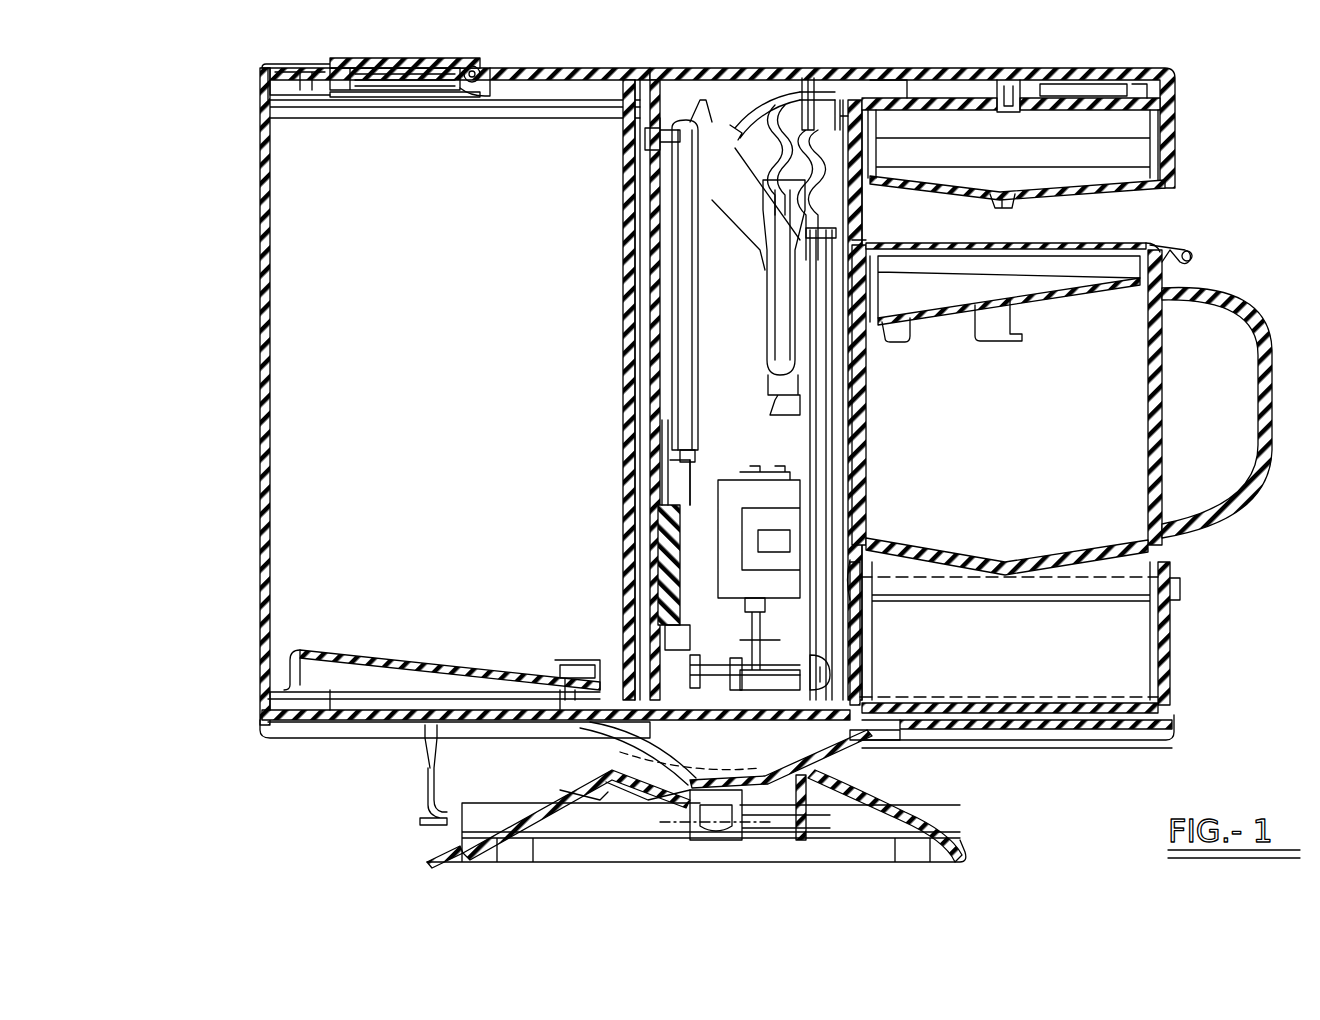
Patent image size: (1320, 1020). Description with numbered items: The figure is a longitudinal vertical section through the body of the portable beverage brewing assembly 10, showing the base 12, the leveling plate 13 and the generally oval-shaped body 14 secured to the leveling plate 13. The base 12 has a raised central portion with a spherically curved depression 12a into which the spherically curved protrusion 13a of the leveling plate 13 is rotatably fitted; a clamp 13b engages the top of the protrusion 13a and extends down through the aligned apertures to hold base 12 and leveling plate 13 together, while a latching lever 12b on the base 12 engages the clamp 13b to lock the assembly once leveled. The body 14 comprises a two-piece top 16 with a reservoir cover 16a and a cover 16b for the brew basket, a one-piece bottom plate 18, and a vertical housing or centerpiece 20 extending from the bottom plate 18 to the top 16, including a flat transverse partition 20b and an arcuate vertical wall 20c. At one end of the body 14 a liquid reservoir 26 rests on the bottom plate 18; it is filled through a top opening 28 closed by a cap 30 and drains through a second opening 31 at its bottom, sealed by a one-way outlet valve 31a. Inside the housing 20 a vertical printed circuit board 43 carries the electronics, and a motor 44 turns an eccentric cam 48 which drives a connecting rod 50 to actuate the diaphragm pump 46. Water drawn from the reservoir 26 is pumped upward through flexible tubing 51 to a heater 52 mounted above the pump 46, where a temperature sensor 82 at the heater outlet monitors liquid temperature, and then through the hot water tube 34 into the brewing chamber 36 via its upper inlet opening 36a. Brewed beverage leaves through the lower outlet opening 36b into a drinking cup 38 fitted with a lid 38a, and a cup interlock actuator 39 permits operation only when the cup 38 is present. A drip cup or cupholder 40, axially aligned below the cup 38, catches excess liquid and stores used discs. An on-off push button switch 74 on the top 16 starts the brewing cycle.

The portable beverage brewing assembly 10 is at (130, 110).
The base 12 is at (706, 796).
The spherically curved depression 12a is at (606, 790).
The latching lever 12b is at (428, 800).
The leveling plate 13 is at (917, 806).
The spherically curved protrusion 13a is at (830, 756).
The clamp 13b is at (718, 842).
The body 14 is at (255, 712).
The two-piece top 16 is at (718, 94).
The reservoir cover 16a is at (536, 68).
The cover for brew basket 16b is at (955, 68).
The bottom plate 18 is at (330, 738).
The housing or centerpiece 20 is at (728, 390).
The transverse partition 20b is at (634, 240).
The arcuate vertical wall 20c is at (846, 222).
The liquid reservoir 26 is at (262, 362).
The top opening 28 is at (440, 100).
The cap 30 is at (432, 58).
The second opening 31 is at (558, 666).
The one-way reservoir outlet valve 31a is at (567, 660).
The hot water tube 34 is at (740, 125).
The brewing chamber 36 is at (1057, 156).
The upper inlet opening 36a is at (1020, 112).
The lower outlet opening 36b is at (1008, 206).
The drinking cup 38 is at (1068, 399).
The lid 38a is at (1170, 250).
The cup interlock actuator 39 is at (845, 382).
The cupholder or drip cup 40 is at (1172, 645).
The printed circuit board 43 is at (806, 424).
The motor 44 is at (735, 500).
The pump 46 is at (672, 582).
The eccentric cam 48 is at (815, 660).
The connecting rod 50 is at (660, 726).
The flexible tubing 51 is at (663, 556).
The heater 52 is at (704, 368).
The on-off push button switch 74 is at (798, 70).
The electronic temperature sensor 82 is at (646, 164).